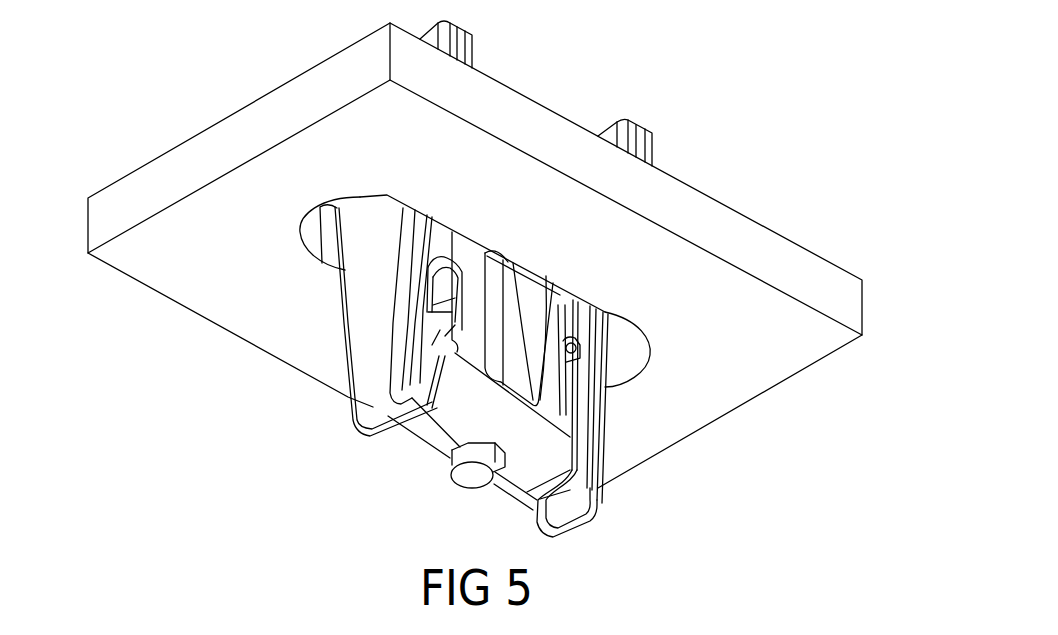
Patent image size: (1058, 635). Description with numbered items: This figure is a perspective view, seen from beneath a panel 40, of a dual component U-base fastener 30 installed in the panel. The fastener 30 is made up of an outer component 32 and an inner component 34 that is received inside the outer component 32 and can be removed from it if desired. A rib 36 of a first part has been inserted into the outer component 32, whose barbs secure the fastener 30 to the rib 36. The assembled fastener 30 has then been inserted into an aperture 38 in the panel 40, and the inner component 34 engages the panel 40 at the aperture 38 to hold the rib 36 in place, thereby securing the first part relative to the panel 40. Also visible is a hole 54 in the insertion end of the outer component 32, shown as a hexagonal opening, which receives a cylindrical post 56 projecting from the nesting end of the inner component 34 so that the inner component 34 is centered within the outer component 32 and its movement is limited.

The dual component U-base fastener 30 is at (403, 461).
The outer component 32 is at (547, 457).
The inner component 34 is at (521, 350).
The rib 36 is at (368, 378).
The aperture 38 is at (362, 195).
The panel 40 is at (148, 199).
The hole 54 is at (507, 503).
The post 56 is at (475, 478).